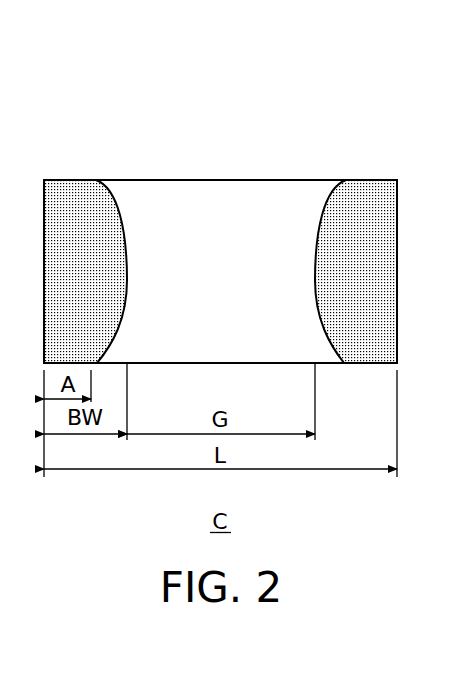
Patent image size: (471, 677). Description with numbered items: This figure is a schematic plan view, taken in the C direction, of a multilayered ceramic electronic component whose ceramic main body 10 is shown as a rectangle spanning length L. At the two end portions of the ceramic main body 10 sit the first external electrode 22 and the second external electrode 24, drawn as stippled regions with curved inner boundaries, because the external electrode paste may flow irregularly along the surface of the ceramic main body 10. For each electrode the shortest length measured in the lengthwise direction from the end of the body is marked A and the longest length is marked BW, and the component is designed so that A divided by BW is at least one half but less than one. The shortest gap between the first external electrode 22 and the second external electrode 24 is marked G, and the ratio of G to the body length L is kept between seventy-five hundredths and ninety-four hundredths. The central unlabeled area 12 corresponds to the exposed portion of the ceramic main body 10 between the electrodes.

The ceramic main body 10 is at (220, 195).
The ceramic body 12 is at (222, 200).
The first external electrode 22 is at (78, 198).
The second external electrode 24 is at (361, 198).